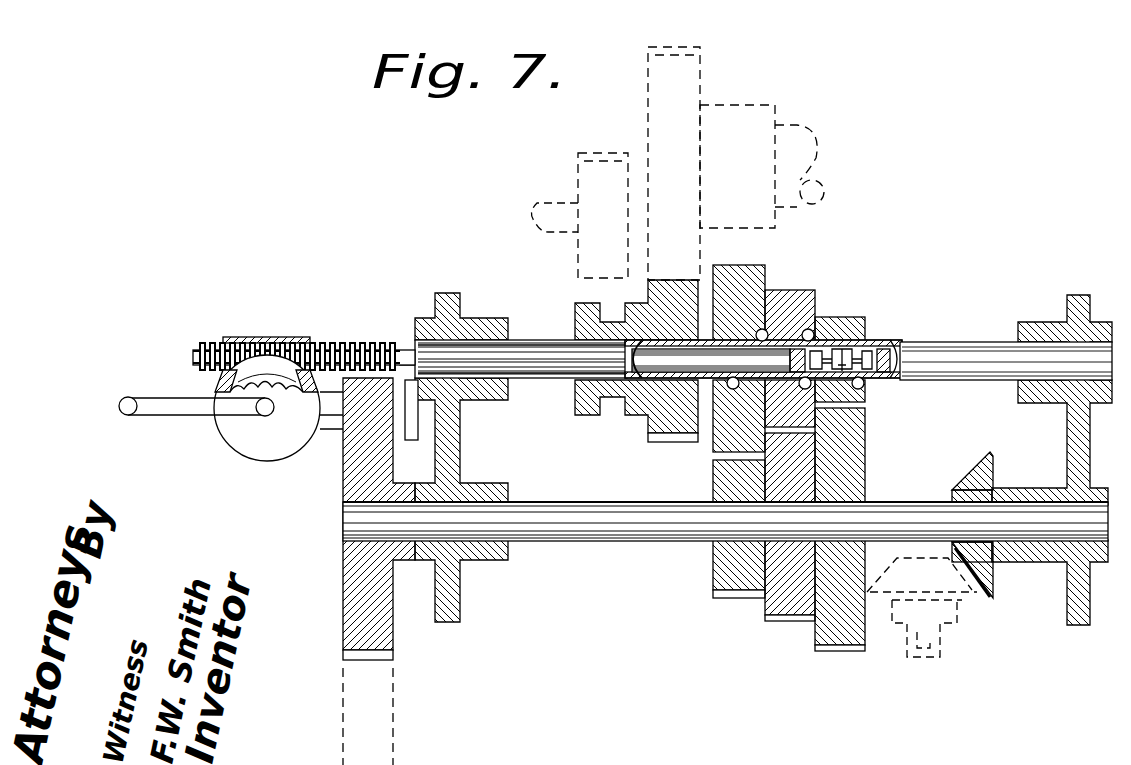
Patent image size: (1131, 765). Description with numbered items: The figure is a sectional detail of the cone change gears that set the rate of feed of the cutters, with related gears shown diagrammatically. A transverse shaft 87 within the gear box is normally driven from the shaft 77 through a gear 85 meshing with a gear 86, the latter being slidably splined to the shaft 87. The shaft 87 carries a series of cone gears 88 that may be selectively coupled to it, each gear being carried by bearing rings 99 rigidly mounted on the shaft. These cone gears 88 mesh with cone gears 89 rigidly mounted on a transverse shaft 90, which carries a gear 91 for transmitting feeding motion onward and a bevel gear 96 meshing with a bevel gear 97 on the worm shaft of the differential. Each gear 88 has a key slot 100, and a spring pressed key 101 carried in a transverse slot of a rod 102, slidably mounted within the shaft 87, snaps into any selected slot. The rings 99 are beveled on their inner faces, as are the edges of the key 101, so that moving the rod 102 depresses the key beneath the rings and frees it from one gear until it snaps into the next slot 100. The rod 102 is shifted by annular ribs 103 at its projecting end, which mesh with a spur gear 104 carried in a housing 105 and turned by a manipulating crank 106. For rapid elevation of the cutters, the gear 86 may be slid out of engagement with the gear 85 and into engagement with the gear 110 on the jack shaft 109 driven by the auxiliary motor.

The shaft 77 is at (806, 121).
The gear 85 is at (672, 46).
The gear 86 is at (658, 436).
The transverse shaft 87 is at (950, 346).
The cone gears 88 is at (824, 291).
The cone gears 89 is at (869, 476).
The transverse shaft 90 is at (630, 542).
The gear 91 is at (354, 578).
The bevel gear 96 is at (992, 468).
The bevel gear 97 is at (968, 602).
The bearing rings 99 is at (710, 340).
The key slot 100 is at (790, 332).
The spring pressed key 101 is at (835, 342).
The rod 102 is at (668, 356).
The annular ribs 103 is at (328, 345).
The spur gear 104 is at (222, 388).
The housing 105 is at (291, 436).
The manipulating crank 106 is at (186, 408).
The jack shaft 109 is at (560, 237).
The gear 110 is at (587, 154).